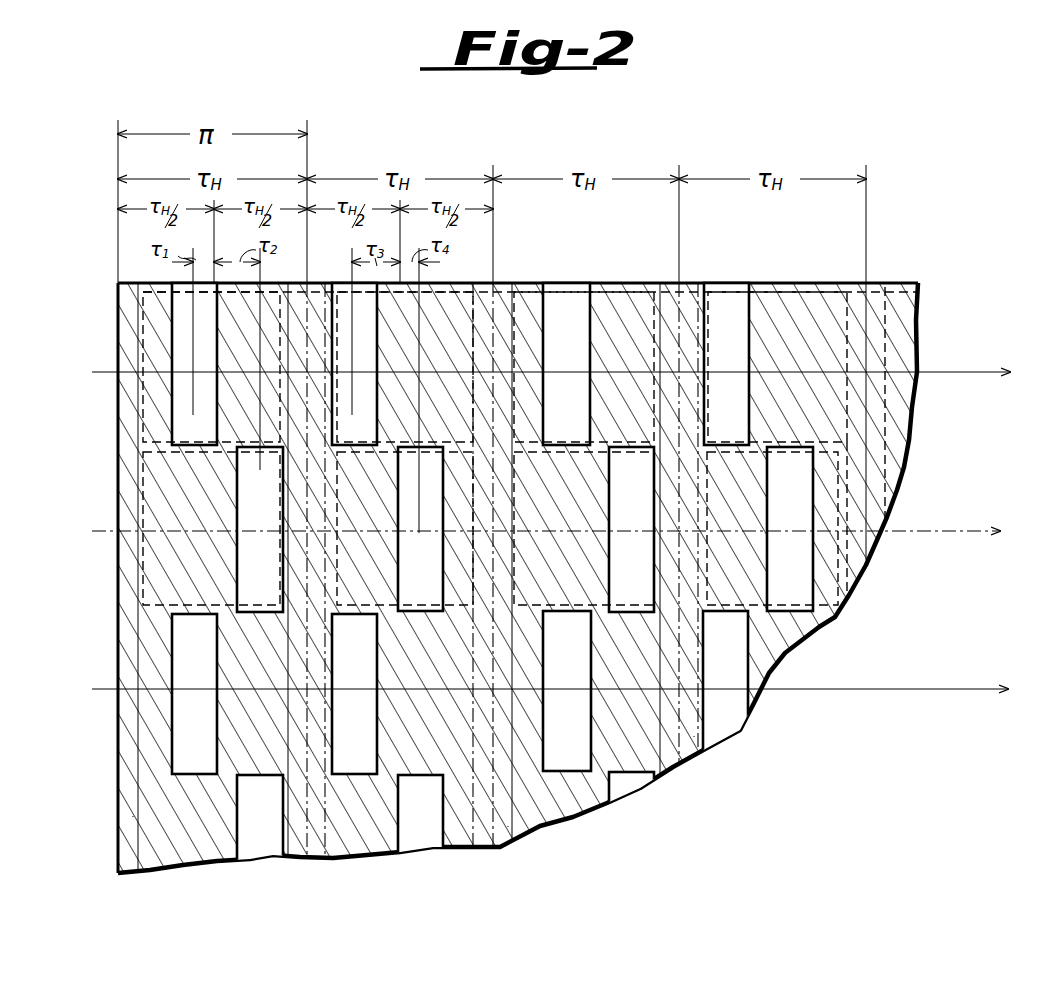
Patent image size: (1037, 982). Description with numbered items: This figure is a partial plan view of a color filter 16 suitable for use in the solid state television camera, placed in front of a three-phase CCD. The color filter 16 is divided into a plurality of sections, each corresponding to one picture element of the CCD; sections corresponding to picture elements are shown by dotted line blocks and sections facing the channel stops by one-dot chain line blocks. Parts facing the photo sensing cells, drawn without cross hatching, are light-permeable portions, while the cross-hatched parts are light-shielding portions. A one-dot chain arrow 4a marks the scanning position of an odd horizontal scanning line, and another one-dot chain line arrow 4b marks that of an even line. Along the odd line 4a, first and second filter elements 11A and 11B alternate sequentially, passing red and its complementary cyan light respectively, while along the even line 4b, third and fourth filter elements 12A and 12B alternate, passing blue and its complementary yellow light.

The color filter 16 is at (888, 272).
The first filter element 11A is at (345, 292).
The second filter element 11B is at (178, 405).
The third filter element 12A is at (250, 505).
The fourth filter element 12B is at (407, 485).
The one-dot chain arrow 4a is at (976, 372).
The one-dot chain line arrow 4b is at (962, 531).